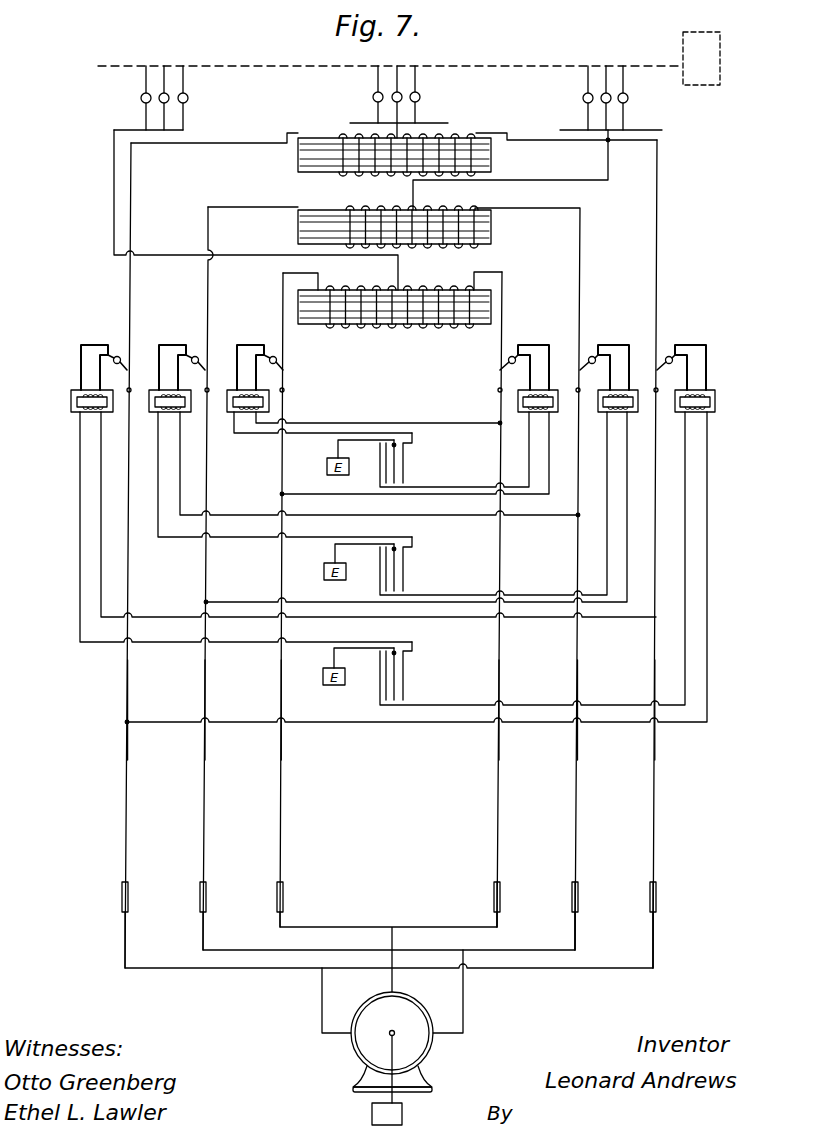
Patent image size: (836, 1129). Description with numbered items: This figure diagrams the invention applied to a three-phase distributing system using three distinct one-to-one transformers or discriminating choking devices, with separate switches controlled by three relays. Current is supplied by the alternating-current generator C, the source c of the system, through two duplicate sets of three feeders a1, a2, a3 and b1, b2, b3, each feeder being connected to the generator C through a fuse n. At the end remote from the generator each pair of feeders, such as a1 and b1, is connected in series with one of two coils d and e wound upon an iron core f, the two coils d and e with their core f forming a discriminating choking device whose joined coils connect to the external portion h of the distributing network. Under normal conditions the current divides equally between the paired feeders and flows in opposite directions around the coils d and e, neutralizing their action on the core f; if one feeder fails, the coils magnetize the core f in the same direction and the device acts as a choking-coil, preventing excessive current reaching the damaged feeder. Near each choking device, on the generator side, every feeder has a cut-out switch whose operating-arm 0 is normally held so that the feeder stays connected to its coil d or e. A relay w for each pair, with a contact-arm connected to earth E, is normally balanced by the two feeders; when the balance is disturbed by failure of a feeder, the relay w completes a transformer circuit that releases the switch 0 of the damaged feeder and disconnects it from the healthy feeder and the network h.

The external portion of the distributing network h is at (633, 89).
The coil d is at (357, 289).
The alternating-current generator c is at (458, 136).
The coil e is at (456, 289).
The iron core f is at (512, 293).
The switch-lever operating-arm 0 is at (393, 370).
The earth connection E is at (521, 578).
The relay w is at (414, 673).
The feeder a' a1 is at (281, 700).
The feeder a² a2 is at (128, 700).
The feeder a³ a3 is at (205, 700).
The feeder b' b1 is at (505, 680).
The feeder b² b2 is at (583, 680).
The feeder b³ b3 is at (661, 680).
The fuse n is at (662, 889).
The alternating-current generator C is at (392, 1042).